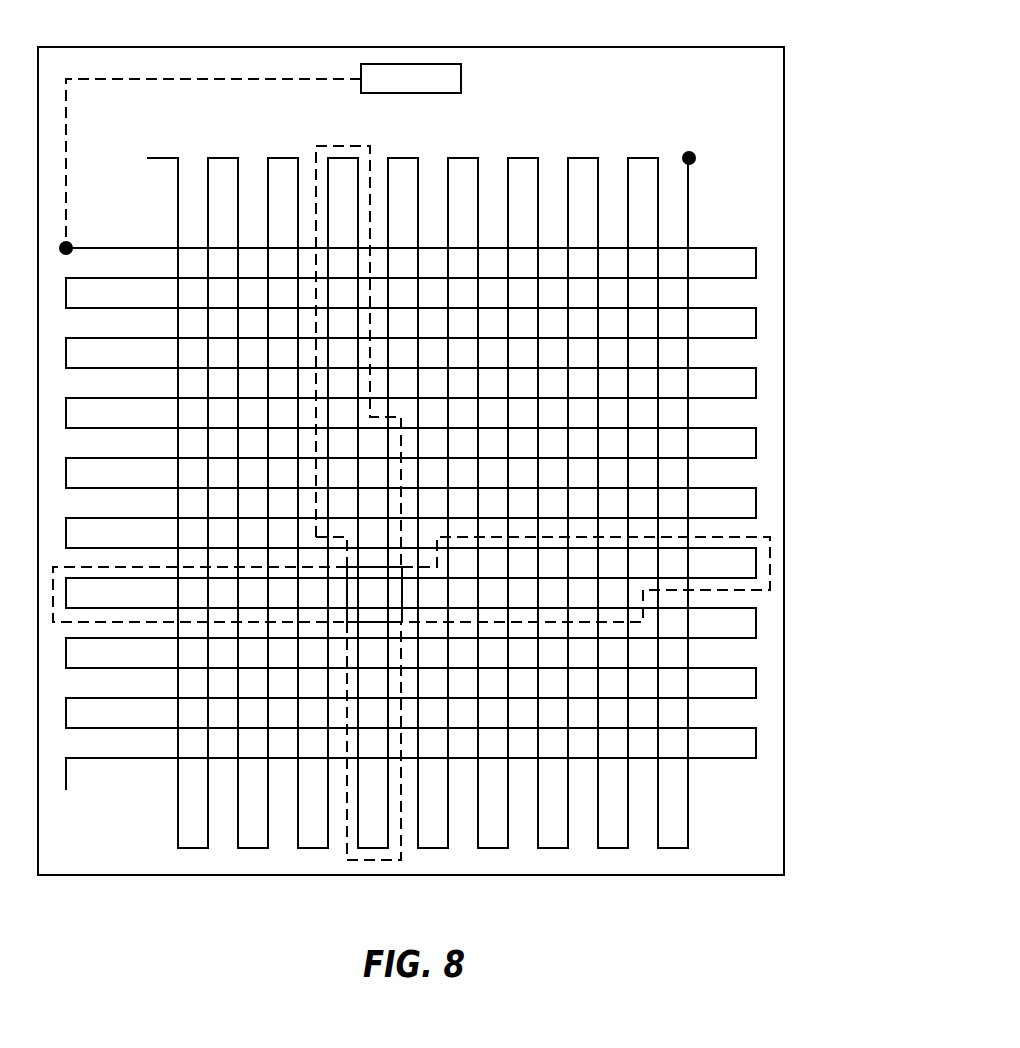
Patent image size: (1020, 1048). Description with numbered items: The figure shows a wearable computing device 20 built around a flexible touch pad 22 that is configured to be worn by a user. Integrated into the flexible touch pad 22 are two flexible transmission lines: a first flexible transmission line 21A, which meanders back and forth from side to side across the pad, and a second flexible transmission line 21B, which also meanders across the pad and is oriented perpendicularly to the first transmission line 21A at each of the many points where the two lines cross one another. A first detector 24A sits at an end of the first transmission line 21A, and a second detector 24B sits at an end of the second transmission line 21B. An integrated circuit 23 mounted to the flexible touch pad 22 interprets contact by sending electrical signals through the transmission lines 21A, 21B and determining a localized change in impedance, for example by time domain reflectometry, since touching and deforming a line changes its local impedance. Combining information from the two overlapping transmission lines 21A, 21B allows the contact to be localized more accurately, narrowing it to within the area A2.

The wearable computing device 20 is at (722, 28).
The flexible transmission line 21A is at (738, 488).
The second flexible transmission line 21B is at (520, 158).
The flexible touch pad 22 is at (767, 95).
The integrated circuit 23 is at (461, 79).
The first detector 24A is at (70, 242).
The second detector 24B is at (697, 158).
The area A2 is at (375, 602).